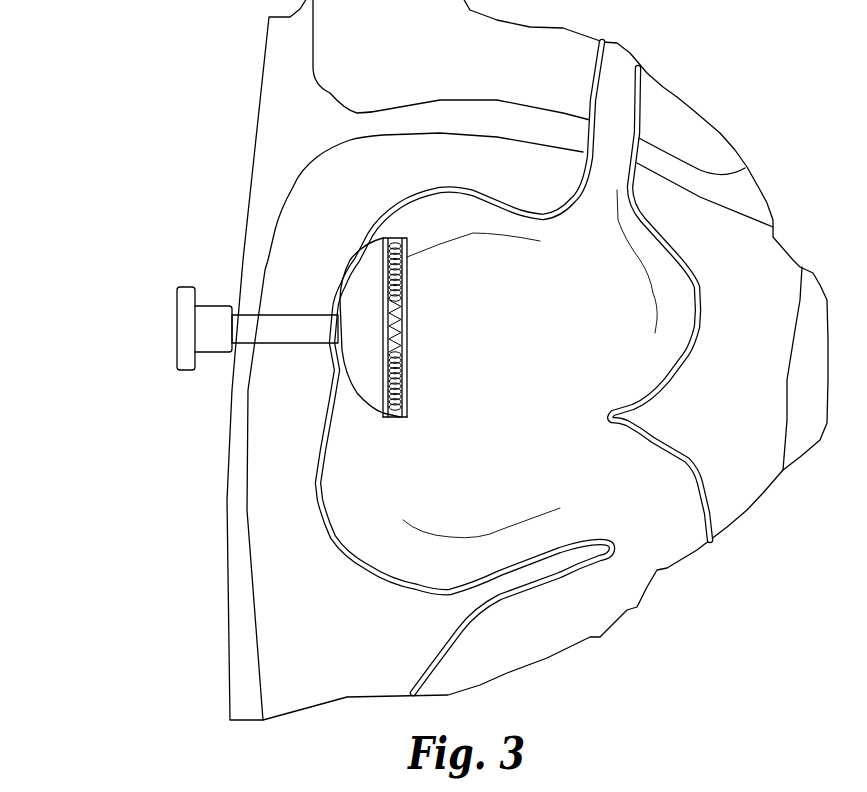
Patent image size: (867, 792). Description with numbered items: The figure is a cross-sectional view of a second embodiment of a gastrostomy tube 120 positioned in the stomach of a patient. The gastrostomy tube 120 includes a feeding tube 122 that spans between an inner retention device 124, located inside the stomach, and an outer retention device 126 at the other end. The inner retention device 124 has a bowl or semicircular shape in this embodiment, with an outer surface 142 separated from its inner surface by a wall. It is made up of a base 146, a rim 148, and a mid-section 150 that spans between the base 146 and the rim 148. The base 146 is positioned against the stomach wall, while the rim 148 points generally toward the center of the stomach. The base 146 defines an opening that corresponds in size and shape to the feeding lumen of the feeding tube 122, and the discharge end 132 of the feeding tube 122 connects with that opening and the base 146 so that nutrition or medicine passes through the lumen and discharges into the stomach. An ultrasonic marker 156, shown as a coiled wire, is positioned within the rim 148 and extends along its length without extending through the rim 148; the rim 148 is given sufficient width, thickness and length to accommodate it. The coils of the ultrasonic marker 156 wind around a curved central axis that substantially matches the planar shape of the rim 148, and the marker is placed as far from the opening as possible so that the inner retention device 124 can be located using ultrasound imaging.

The gastrostomy tube 120 is at (274, 327).
The feeding tube 122 is at (259, 331).
The inner retention device 124 is at (343, 247).
The outer retention device 126 is at (165, 305).
The discharge end 132 is at (325, 330).
The outer surface 142 is at (368, 362).
The base 146 is at (342, 372).
The rim 148 is at (402, 316).
The mid-section 150 is at (385, 258).
The ultrasonic marker 156 is at (397, 418).